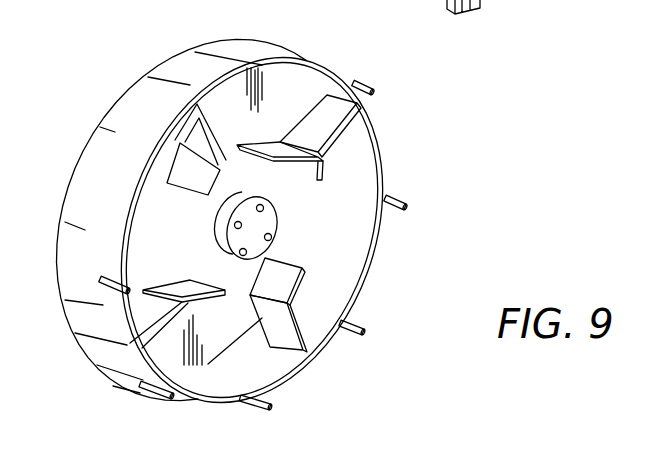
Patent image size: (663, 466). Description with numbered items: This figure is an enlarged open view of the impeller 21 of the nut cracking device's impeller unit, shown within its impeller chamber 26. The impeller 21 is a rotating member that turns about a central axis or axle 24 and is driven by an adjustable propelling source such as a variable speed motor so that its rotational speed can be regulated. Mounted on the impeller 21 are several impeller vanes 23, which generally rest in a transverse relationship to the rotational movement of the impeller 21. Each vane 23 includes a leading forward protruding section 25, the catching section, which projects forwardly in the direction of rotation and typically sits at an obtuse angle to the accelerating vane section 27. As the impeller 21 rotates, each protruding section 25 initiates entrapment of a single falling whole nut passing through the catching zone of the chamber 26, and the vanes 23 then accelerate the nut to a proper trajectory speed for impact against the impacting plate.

The impeller 21 is at (250, 47).
The impeller vanes 23 is at (224, 112).
The central axis or axle 24 is at (265, 227).
The leading forward protruding section 25 is at (305, 288).
The impeller chamber 26 is at (353, 169).
The accelerating vane section 27 is at (303, 333).